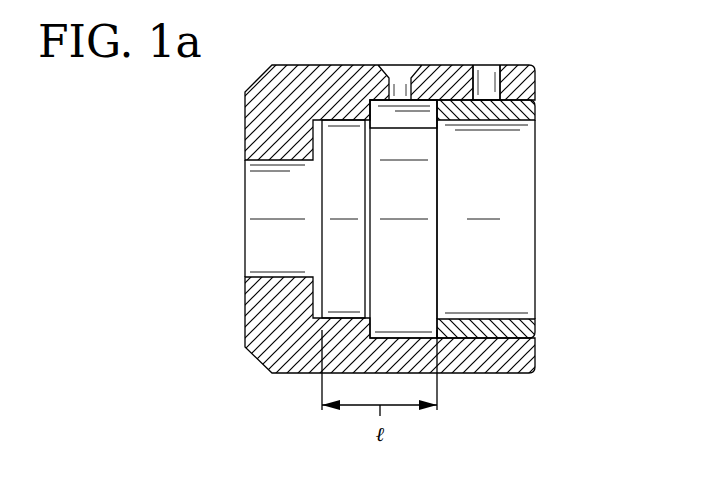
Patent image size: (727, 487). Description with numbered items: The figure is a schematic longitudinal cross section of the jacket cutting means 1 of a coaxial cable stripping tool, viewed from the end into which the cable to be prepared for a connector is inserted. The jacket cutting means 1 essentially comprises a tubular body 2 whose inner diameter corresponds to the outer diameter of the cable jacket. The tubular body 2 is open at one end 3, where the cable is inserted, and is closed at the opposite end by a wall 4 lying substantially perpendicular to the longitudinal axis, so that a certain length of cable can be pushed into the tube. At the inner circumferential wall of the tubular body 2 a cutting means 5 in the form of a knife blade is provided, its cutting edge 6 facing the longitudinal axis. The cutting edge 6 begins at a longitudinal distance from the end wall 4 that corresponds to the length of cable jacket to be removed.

The jacket cutting means 1 is at (172, 219).
The tubular body 2 is at (513, 78).
The open end 3 is at (505, 217).
The wall 4 is at (318, 295).
The cutting means 5 is at (380, 97).
The cutting edge 6 is at (410, 128).